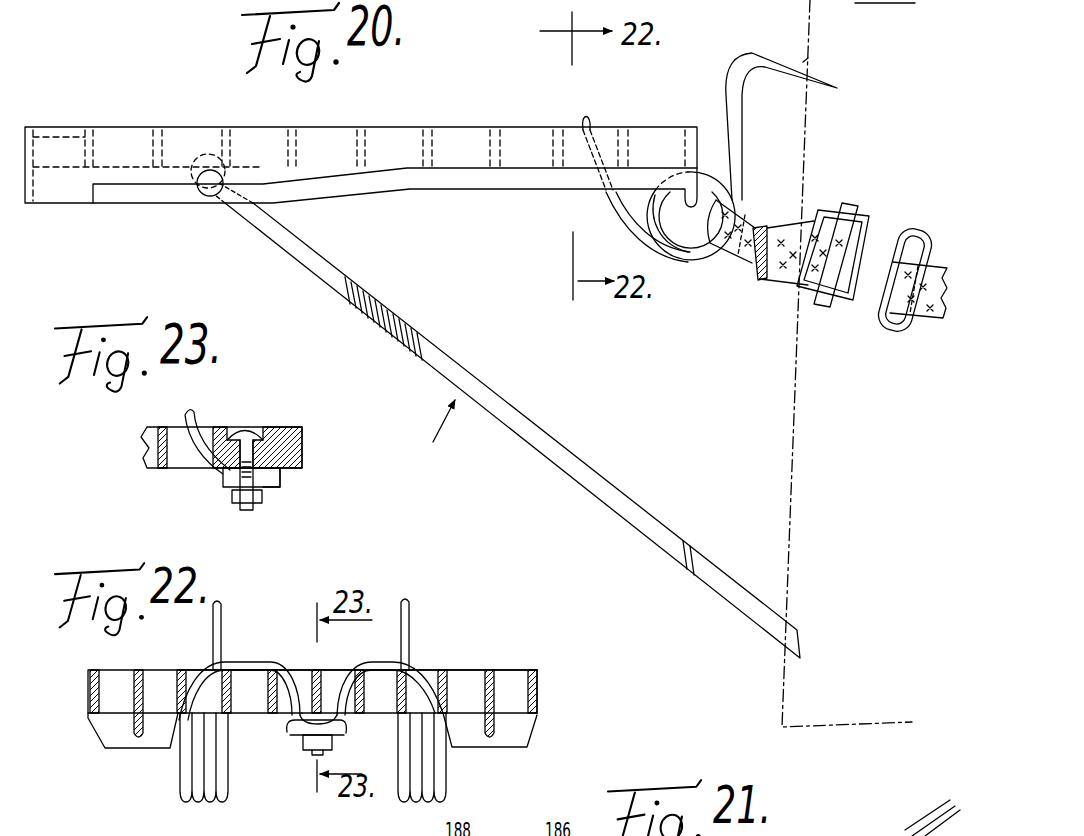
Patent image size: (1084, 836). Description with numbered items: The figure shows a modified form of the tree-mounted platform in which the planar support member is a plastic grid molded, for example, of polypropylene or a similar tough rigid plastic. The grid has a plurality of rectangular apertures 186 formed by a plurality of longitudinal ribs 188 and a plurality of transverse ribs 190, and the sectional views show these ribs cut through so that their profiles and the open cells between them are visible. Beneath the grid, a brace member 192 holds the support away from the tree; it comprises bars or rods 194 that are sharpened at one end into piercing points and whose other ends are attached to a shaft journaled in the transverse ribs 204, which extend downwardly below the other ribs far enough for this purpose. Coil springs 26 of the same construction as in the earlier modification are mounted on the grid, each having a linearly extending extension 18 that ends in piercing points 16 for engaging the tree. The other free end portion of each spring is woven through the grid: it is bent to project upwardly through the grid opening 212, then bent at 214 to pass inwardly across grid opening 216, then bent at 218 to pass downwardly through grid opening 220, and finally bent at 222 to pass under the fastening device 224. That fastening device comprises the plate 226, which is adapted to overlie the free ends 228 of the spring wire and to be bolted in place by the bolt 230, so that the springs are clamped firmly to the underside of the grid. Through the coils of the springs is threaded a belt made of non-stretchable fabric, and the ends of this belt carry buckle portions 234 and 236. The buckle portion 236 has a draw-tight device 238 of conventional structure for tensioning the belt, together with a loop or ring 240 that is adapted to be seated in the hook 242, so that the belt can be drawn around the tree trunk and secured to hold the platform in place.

In FIG. 20, the piercing points 16 is at (801, 63).
In FIG. 20, the linearly extending extension 18 is at (743, 141).
In FIG. 22, the linearly extending extension 18 is at (222, 624).
In FIG. 20, the coil springs 26 is at (684, 268).
In FIG. 22, the rectangular apertures 186 is at (510, 678).
In FIG. 20, the longitudinal ribs 188 is at (178, 126).
In FIG. 22, the longitudinal ribs 188 is at (136, 668).
In FIG. 20, the transverse ribs 190 is at (362, 127).
In FIG. 22, the transverse ribs 190 is at (463, 670).
In FIG. 20, the brace member 192 is at (434, 437).
In FIG. 20, the bars or rods 194 is at (545, 430).
In FIG. 22, the transverse ribs 204 is at (130, 724).
In FIG. 22, the grid opening 212 is at (192, 676).
In FIG. 22, the bend 214 is at (228, 660).
In FIG. 22, the grid opening 216 is at (247, 708).
In FIG. 23, the bend 218 is at (197, 418).
In FIG. 22, the bend 218 is at (290, 658).
In FIG. 23, the grid opening 220 is at (173, 437).
In FIG. 22, the grid opening 220 is at (325, 752).
In FIG. 23, the bend 222 is at (213, 478).
In FIG. 22, the fastening device 224 is at (309, 762).
In FIG. 23, the plate 226 is at (268, 487).
In FIG. 23, the free ends 228 is at (230, 497).
In FIG. 23, the bolt 230 is at (250, 428).
In FIG. 20, the buckle portion 234 is at (888, 342).
In FIG. 20, the buckle portion 236 is at (820, 324).
In FIG. 20, the draw-tight device 238 is at (836, 212).
In FIG. 20, the loop or ring 240 is at (866, 228).
In FIG. 21, the loop or ring 240 is at (898, 817).
In FIG. 20, the hook 242 is at (880, 235).
In FIG. 21, the hook 242 is at (912, 823).